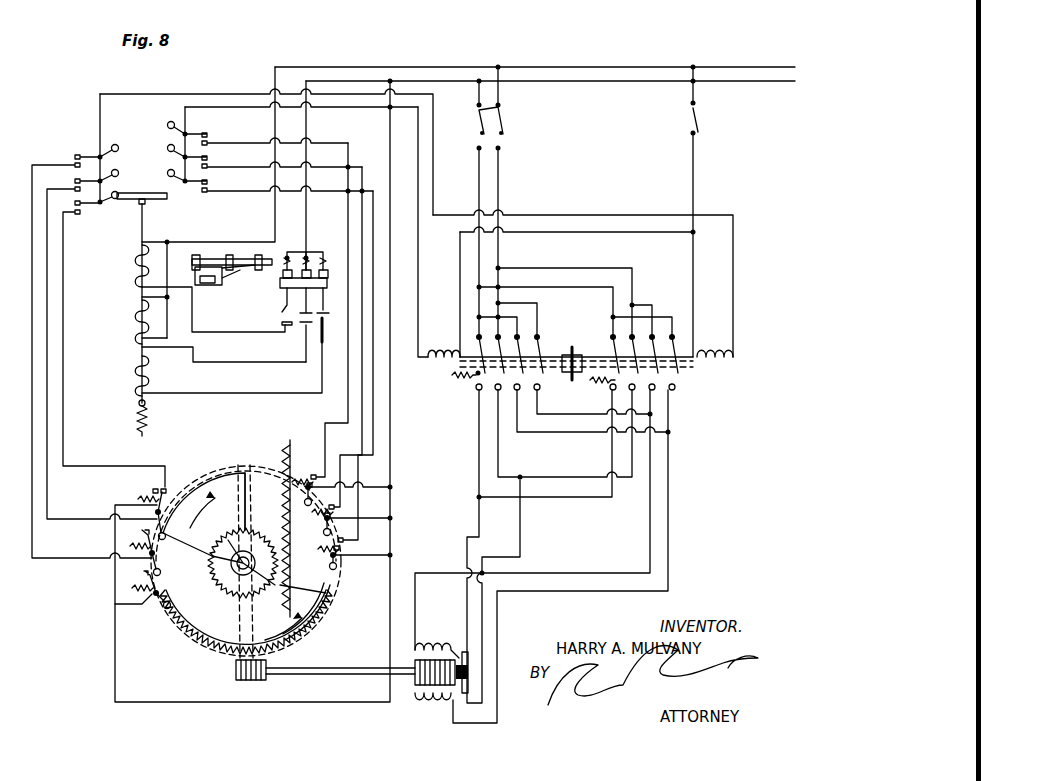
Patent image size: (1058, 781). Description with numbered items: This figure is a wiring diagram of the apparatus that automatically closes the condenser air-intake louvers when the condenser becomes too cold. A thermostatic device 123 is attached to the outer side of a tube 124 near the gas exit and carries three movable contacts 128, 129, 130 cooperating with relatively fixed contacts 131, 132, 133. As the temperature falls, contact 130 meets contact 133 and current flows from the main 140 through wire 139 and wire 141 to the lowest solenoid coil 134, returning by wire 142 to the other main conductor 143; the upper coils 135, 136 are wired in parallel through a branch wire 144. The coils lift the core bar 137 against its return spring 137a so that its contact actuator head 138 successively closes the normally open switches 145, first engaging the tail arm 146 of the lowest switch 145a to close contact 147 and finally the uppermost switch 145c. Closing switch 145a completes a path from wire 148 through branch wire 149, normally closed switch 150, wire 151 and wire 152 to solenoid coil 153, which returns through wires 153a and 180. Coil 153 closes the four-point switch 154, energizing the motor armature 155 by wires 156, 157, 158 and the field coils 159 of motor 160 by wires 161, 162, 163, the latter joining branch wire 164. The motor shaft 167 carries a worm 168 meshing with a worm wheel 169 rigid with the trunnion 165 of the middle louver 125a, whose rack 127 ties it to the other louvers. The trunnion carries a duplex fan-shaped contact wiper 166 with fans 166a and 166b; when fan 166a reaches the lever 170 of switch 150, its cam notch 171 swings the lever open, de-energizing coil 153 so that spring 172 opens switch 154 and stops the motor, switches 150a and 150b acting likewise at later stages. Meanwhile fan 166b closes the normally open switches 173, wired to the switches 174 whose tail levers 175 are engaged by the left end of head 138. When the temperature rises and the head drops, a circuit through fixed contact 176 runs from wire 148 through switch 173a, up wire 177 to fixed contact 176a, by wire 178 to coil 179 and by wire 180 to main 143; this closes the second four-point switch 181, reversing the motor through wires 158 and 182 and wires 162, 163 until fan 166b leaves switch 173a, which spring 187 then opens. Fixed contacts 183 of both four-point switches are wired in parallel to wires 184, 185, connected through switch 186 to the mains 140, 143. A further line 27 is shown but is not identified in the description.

The main line 27 is at (615, 0).
The main conductor 143 is at (544, 67).
The wire 152 is at (270, 76).
The uppermost switch 145c is at (185, 132).
The normally open switches 145 is at (220, 122).
The lowest switch 145a is at (190, 178).
The wire 139 is at (308, 122).
The main wire 140 is at (448, 104).
The switch 186 is at (502, 114).
The wire 178 is at (433, 182).
The wire 184 is at (480, 180).
The wire 185 is at (504, 192).
The wire 180 is at (698, 168).
The tail levers 175 is at (104, 132).
The normally open switches 174 is at (88, 150).
The fixed contact 176a is at (74, 160).
The fixed contact 176 is at (74, 187).
The wire 177 is at (34, 538).
The contact actuator head 138 is at (128, 193).
The core bar 137 is at (142, 218).
The return spring 137a is at (140, 424).
The tail arm 146 is at (175, 176).
The fixed contact 147 is at (206, 192).
The return wire 142 is at (274, 208).
The wire 148 is at (390, 246).
The solenoid coil 136 is at (136, 264).
The solenoid coil 135 is at (136, 309).
The solenoid coil 134 is at (136, 374).
The wire 141 is at (227, 393).
The tube 124 is at (228, 254).
The thermostatic device 123 is at (232, 280).
The branch wire 144 is at (192, 309).
The movable contact 129 is at (318, 316).
The movable contact 128 is at (284, 313).
The fixed contact 131 is at (280, 325).
The fixed contact 132 is at (304, 326).
The movable contact 130 is at (322, 326).
The fixed contact 133 is at (321, 340).
The wire 153a is at (608, 236).
The solenoid coil 153 is at (445, 364).
The coil 179 is at (712, 350).
The fixed contacts 183 is at (540, 338).
The four-point switch 181 is at (678, 378).
The spring 172 is at (478, 380).
The four-point switch 154 is at (472, 394).
The branch wire 164 is at (615, 414).
The wire 161 is at (537, 434).
The wire 158 is at (498, 434).
The wire 182 is at (640, 450).
The wire 151 is at (388, 408).
The wire 156 is at (468, 522).
The wire 157 is at (520, 524).
The wire 163 is at (651, 522).
The wire 162 is at (670, 524).
The field coils 159 is at (442, 650).
The motor armature 155 is at (468, 660).
The motor 160 is at (438, 696).
The worm wheel 169 is at (206, 658).
The contact wiper 166 is at (240, 514).
The wiper fan 166b is at (215, 486).
The wiper fan 166a is at (319, 634).
The trunnion 165 is at (234, 592).
The middle louver 125a is at (255, 464).
The rack 127 is at (292, 440).
The worm 168 is at (267, 676).
The motor shaft 167 is at (333, 676).
The normally open switches 173 is at (172, 490).
The spring 187 is at (136, 588).
The lever actuated switch 173a is at (150, 604).
The normally closed switch 150b is at (301, 482).
The normally closed switch 150a is at (322, 526).
The normally closed switch 150 is at (332, 566).
The branch wire 149 is at (372, 552).
The switch lever 170 is at (344, 580).
The cam notch 171 is at (334, 600).